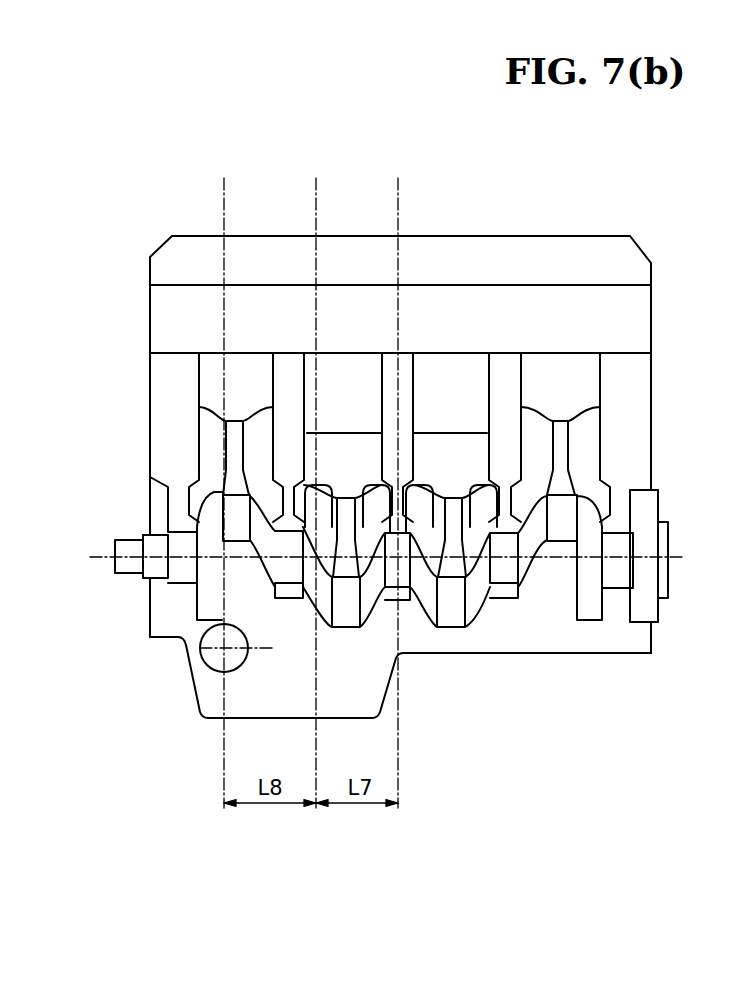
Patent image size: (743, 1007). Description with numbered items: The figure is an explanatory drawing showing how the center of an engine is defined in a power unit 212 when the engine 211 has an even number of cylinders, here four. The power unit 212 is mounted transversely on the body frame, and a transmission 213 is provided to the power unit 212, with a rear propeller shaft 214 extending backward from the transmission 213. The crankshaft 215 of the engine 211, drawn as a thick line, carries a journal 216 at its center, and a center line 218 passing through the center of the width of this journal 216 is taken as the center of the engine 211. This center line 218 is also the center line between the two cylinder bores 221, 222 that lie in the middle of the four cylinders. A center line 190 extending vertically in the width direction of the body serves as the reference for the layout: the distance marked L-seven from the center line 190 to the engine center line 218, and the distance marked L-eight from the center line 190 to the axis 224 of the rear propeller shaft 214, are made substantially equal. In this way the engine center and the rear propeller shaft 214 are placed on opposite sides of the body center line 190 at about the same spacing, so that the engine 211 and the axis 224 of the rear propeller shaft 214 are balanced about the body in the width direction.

The center line 190 is at (314, 220).
The engine 211 is at (570, 238).
The power unit 212 is at (123, 243).
The transmission 213 is at (147, 617).
The rear propeller shaft 214 is at (200, 658).
The crankshaft 215 is at (670, 532).
The journal 216 is at (427, 625).
The center line 218 is at (400, 222).
The cylinder bore 221 is at (380, 393).
The cylinder bore 222 is at (488, 392).
The axis 224 is at (223, 650).